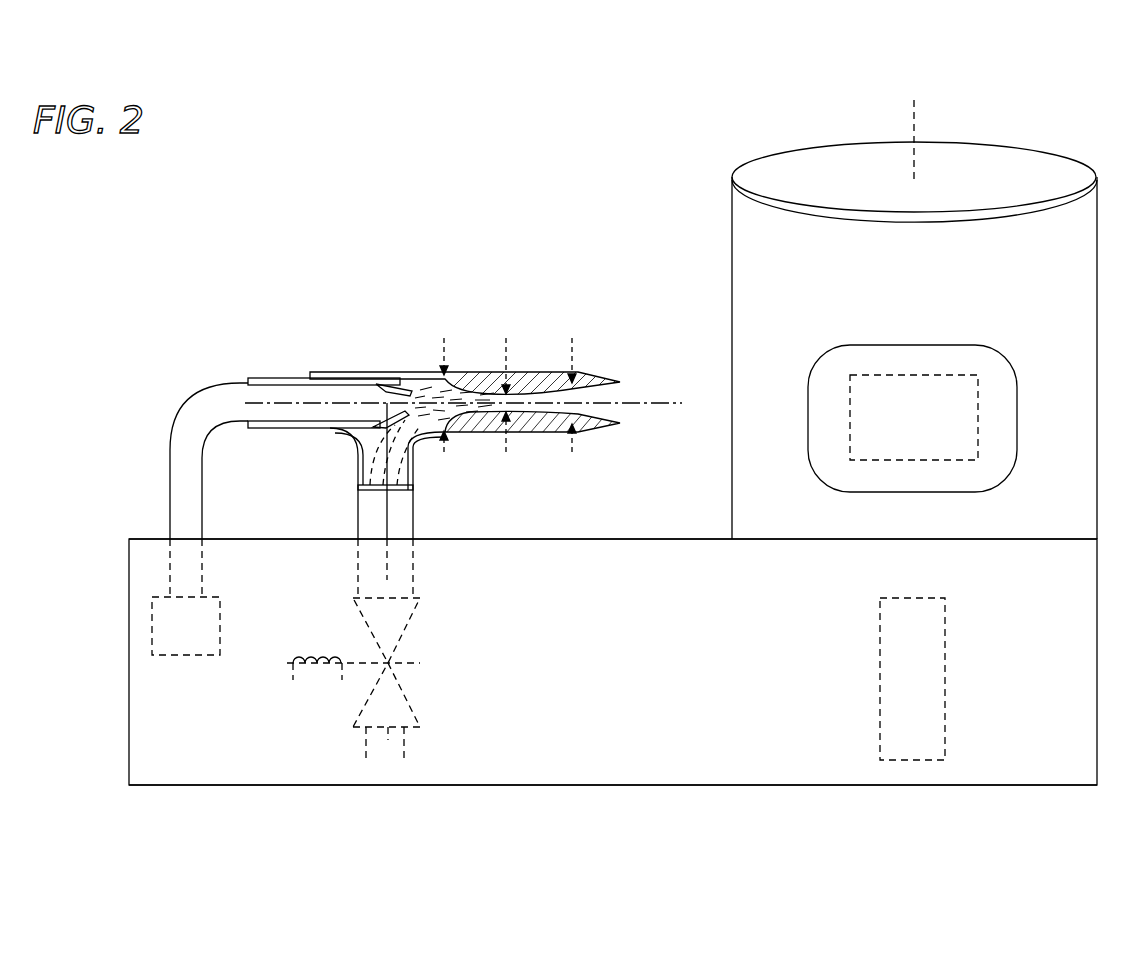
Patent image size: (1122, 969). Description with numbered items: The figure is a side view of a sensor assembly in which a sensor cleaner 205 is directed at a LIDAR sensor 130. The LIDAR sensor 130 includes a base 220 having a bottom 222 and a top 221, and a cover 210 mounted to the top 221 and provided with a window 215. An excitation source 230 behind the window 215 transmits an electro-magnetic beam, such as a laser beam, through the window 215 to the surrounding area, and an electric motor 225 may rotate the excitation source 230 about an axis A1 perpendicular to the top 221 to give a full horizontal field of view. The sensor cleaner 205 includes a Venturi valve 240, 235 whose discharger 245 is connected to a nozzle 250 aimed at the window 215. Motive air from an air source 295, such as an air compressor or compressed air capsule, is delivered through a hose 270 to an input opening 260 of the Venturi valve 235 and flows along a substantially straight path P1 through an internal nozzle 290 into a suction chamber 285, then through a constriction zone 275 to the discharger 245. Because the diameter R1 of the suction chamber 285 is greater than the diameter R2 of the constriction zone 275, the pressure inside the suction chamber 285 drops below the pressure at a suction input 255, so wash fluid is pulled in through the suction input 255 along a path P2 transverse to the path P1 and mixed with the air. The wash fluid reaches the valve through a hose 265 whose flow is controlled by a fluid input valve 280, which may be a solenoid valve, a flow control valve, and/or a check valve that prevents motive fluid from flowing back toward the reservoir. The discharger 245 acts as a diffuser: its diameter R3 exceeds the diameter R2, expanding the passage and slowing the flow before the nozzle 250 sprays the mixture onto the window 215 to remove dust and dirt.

The LIDAR sensor 130 is at (865, 295).
The sensor cleaner 205 is at (500, 184).
The cover 210 is at (748, 228).
The window 215 is at (880, 357).
The base 220 is at (625, 762).
The top 221 is at (624, 536).
The bottom 222 is at (470, 786).
The electric motor 225 is at (918, 762).
The excitation source 230 is at (948, 374).
The Venturi valve 235 is at (326, 352).
The Venturi valve 240 is at (397, 383).
The discharger 245 is at (560, 403).
The nozzle 250 is at (631, 389).
The suction input 255 is at (358, 475).
The input opening 260 is at (268, 377).
The hose 265 is at (358, 517).
The hose 270 is at (170, 495).
The constriction zone 275 is at (495, 403).
The fluid input valve 280 is at (358, 727).
The suction chamber 285 is at (424, 390).
The internal nozzle 290 is at (406, 422).
The air source 295 is at (200, 655).
The axis A1 is at (911, 120).
The path P1 is at (461, 402).
The path P2 is at (388, 580).
The diameter R1 is at (447, 409).
The diameter R2 is at (507, 409).
The diameter R3 is at (573, 409).